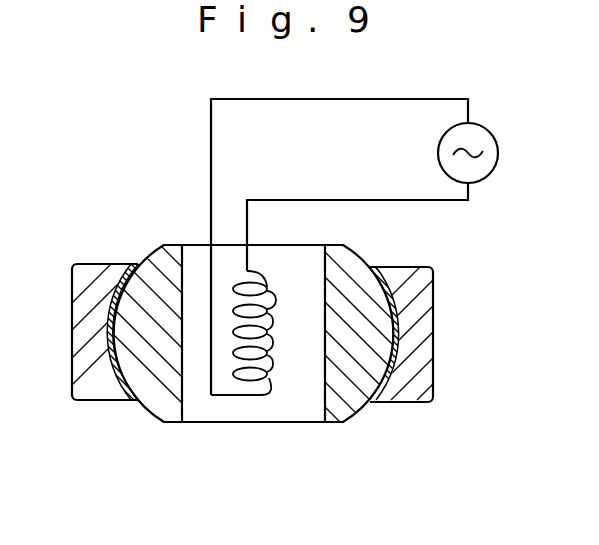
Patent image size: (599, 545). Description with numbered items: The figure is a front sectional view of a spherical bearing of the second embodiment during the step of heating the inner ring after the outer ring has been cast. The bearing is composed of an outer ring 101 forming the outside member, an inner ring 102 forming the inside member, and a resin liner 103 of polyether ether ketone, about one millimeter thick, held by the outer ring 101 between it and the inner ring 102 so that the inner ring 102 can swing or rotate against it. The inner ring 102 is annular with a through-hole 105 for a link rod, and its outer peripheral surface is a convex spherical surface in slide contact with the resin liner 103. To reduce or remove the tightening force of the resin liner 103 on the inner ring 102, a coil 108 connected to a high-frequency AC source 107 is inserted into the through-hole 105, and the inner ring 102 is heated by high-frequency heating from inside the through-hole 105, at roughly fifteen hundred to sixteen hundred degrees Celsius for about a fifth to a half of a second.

The outer ring 101 is at (428, 268).
The inner ring 102 is at (158, 248).
The resin liner 103 is at (114, 371).
The through-hole 105 is at (184, 401).
The high-frequency AC source 107 is at (488, 131).
The coil 108 is at (275, 366).